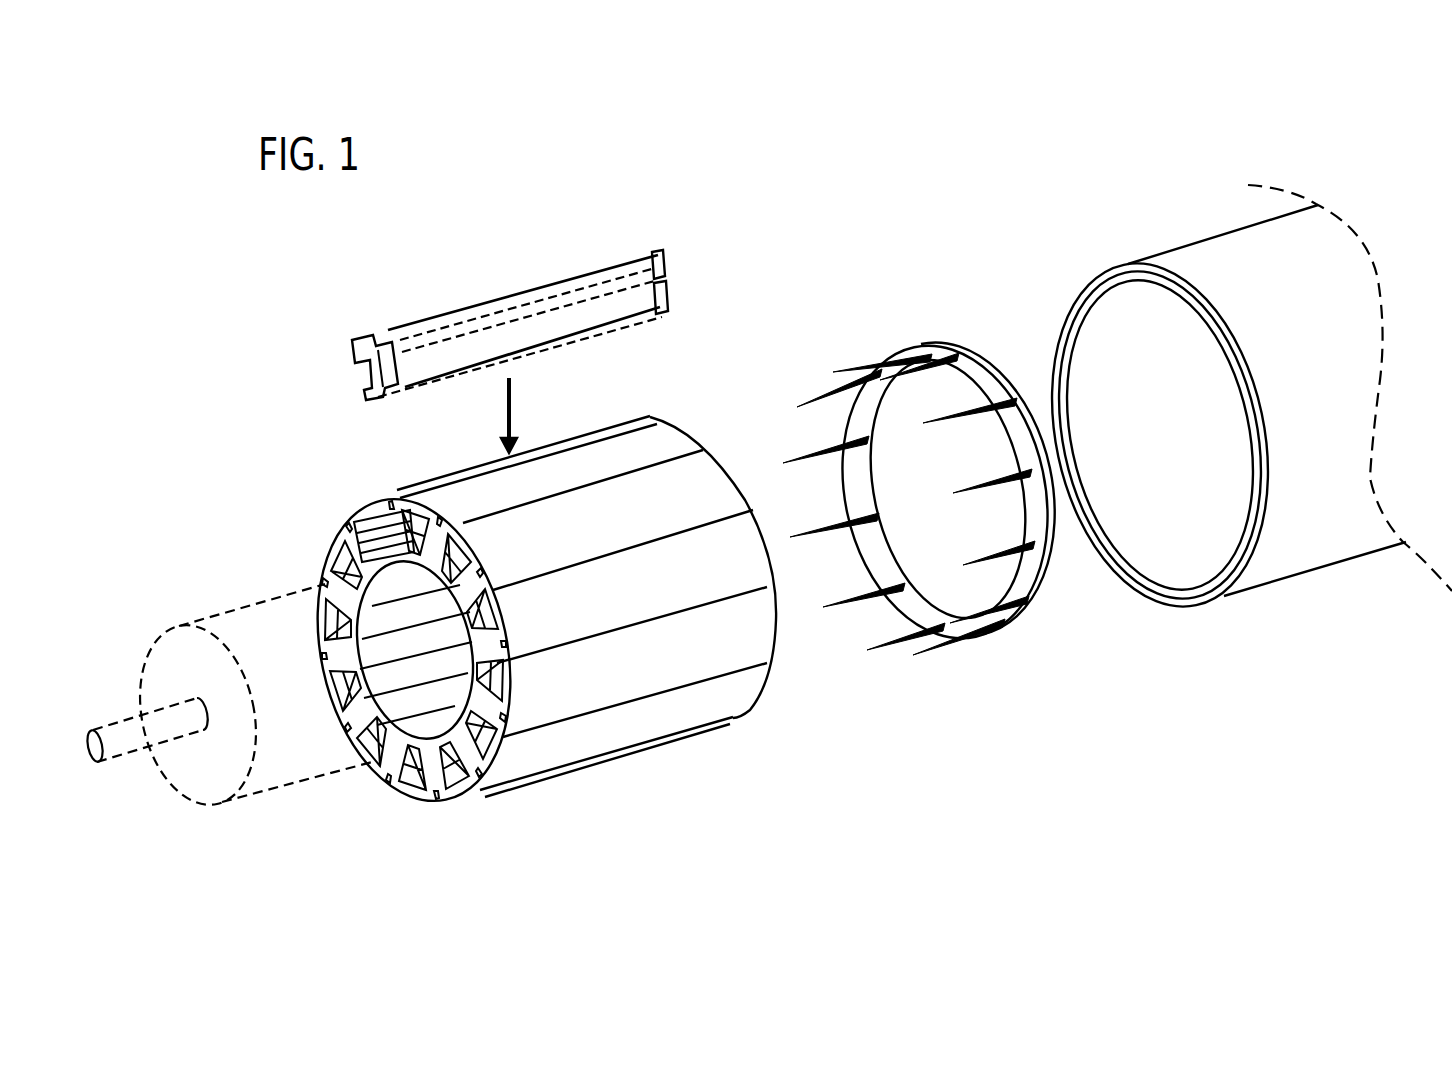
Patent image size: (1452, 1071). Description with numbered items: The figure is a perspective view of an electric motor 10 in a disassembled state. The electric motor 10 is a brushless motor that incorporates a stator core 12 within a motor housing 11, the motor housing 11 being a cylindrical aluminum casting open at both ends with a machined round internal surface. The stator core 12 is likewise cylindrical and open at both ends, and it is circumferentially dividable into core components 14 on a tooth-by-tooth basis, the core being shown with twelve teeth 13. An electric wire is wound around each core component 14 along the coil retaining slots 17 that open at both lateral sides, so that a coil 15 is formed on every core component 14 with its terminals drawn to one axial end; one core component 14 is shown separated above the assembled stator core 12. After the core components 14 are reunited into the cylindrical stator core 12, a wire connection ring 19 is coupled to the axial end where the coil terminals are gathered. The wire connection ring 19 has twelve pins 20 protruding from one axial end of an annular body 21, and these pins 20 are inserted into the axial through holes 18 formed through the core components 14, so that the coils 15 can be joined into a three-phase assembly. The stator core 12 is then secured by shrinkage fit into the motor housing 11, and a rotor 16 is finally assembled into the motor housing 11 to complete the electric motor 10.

The electric motor 10 is at (926, 140).
The motor housing 11 is at (1187, 245).
The stator core 12 is at (616, 425).
The teeth 13 is at (378, 400).
The core components 14 is at (638, 242).
The coil 15 is at (362, 505).
The rotor 16 is at (208, 615).
The coil retaining slots 17 is at (368, 368).
The axial through holes 18 is at (366, 338).
The wire connection ring 19 is at (903, 336).
The pins 20 is at (852, 368).
The annular body 21 is at (978, 345).